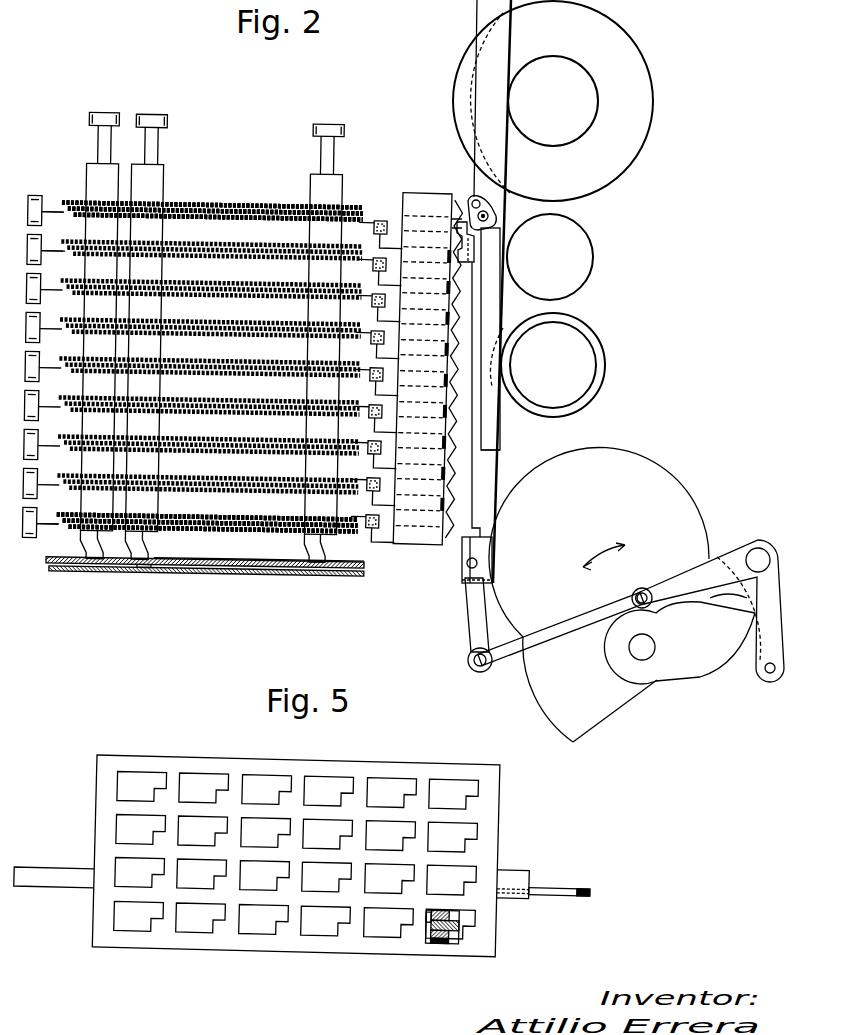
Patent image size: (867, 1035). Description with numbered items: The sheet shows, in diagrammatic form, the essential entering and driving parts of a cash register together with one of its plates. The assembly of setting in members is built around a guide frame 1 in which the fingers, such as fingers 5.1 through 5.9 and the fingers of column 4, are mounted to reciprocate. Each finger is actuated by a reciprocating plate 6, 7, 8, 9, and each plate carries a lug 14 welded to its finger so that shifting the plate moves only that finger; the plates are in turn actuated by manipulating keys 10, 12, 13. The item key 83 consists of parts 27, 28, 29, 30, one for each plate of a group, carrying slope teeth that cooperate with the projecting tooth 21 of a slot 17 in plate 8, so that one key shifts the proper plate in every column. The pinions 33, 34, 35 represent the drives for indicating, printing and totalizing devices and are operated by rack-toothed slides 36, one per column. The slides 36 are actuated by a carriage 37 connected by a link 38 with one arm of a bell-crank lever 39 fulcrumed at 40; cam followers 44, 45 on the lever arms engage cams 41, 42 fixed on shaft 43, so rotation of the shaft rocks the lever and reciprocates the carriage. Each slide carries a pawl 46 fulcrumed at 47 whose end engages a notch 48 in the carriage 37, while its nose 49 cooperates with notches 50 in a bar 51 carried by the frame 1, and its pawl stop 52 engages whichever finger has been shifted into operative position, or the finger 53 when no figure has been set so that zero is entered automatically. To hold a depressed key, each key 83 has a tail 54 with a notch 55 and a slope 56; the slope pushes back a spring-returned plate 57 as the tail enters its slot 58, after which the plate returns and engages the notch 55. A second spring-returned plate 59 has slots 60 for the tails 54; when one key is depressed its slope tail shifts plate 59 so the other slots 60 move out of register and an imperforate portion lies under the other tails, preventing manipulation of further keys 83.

In FIG. 2, the guide frame 1 is at (413, 200).
In FIG. 5, the finger 4 is at (581, 892).
In FIG. 2, the finger 5.1 is at (375, 246).
In FIG. 2, the finger 5.9 is at (380, 514).
In FIG. 2, the reciprocating plate 6 is at (236, 204).
In FIG. 2, the reciprocating plate 7 is at (222, 207).
In FIG. 2, the reciprocating plate 8 is at (207, 206).
In FIG. 5, the reciprocating plate 8 is at (181, 765).
In FIG. 2, the reciprocating plate 9 is at (187, 205).
In FIG. 2, the manipulating key 10 is at (75, 205).
In FIG. 2, the manipulating key 12 is at (68, 250).
In FIG. 5, the manipulating key 12 is at (65, 874).
In FIG. 2, the manipulating key 13 is at (49, 211).
In FIG. 5, the lug 14 is at (521, 875).
In FIG. 5, the slot 17 is at (384, 790).
In FIG. 5, the projecting tooth 21 is at (474, 805).
In FIG. 5, the key part 27 is at (433, 914).
In FIG. 5, the key part 28 is at (438, 924).
In FIG. 5, the key part 29 is at (444, 934).
In FIG. 5, the key part 30 is at (448, 941).
In FIG. 2, the pinion 33 is at (588, 113).
In FIG. 2, the pinion 34 is at (585, 258).
In FIG. 2, the pinion 35 is at (570, 343).
In FIG. 2, the slide 36 is at (483, 13).
In FIG. 2, the carriage 37 is at (483, 548).
In FIG. 2, the link 38 is at (473, 612).
In FIG. 2, the bell-crank lever 39 is at (552, 633).
In FIG. 2, the fulcrum 40 is at (753, 556).
In FIG. 2, the cam 41 is at (715, 640).
In FIG. 2, the cam 42 is at (600, 727).
In FIG. 2, the shaft 43 is at (640, 655).
In FIG. 2, the cam follower 44 is at (647, 588).
In FIG. 2, the cam follower 45 is at (766, 681).
In FIG. 2, the pawl 46 is at (483, 234).
In FIG. 2, the pawl fulcrum 47 is at (487, 217).
In FIG. 2, the notch 48 is at (480, 532).
In FIG. 2, the nose 49 is at (465, 258).
In FIG. 2, the notches 50 is at (458, 438).
In FIG. 2, the bar 51 is at (451, 520).
In FIG. 2, the pawl stop 52 is at (466, 216).
In FIG. 2, the finger 53 is at (405, 214).
In FIG. 2, the tail 54 is at (137, 556).
In FIG. 2, the notch 55 is at (123, 535).
In FIG. 2, the slope 56 is at (306, 561).
In FIG. 2, the plate 57 is at (218, 564).
In FIG. 2, the slot 58 is at (158, 563).
In FIG. 2, the plate 59 is at (200, 571).
In FIG. 2, the slot 60 is at (150, 571).
In FIG. 2, the item key 83 is at (152, 133).
In FIG. 5, the item key 83 is at (455, 1001).